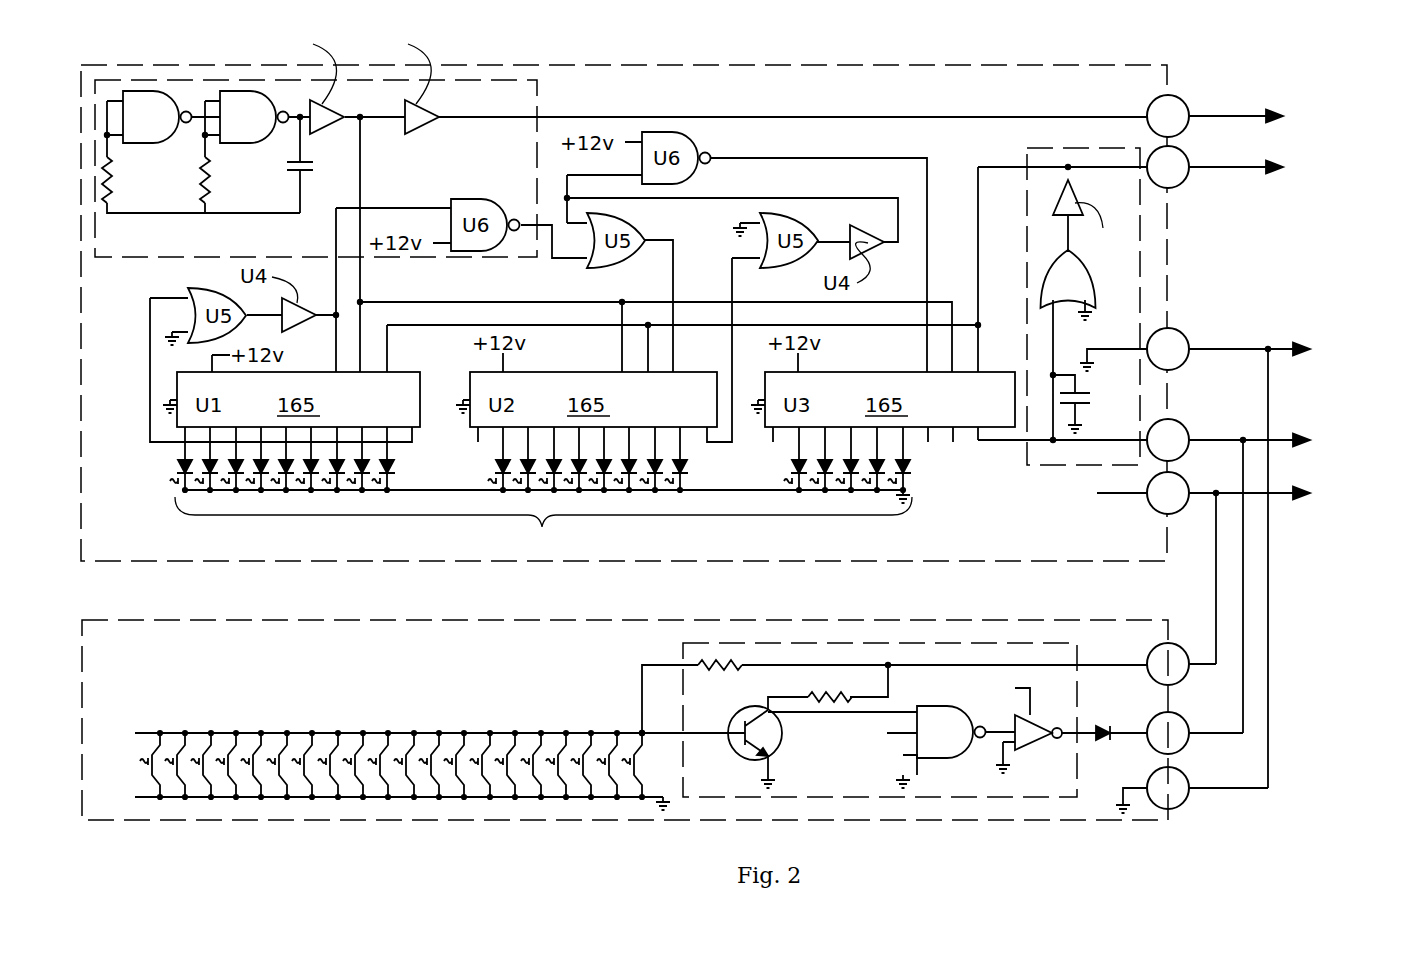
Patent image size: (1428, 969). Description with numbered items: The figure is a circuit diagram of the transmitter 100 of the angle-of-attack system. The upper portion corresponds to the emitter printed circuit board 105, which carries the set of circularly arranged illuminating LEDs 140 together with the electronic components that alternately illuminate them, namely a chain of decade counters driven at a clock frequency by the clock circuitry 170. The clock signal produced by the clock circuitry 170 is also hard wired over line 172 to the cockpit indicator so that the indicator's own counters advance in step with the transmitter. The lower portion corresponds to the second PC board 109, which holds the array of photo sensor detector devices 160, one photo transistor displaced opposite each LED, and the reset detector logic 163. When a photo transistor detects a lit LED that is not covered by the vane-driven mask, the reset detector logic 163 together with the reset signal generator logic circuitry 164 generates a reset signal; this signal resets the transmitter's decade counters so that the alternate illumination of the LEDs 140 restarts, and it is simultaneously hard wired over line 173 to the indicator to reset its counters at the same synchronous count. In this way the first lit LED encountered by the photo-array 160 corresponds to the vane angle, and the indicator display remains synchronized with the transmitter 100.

The transmitter 100 is at (1287, 583).
The printed circuit board 105 is at (670, 88).
The second PC board 109 is at (588, 650).
The LEDs 140 is at (542, 532).
The photo sensor detector devices 160 is at (398, 697).
The reset detector logic 163 is at (980, 652).
The reset signal generator logic circuitry 164 is at (1043, 150).
The clock circuitry 170 is at (495, 88).
The line 172 is at (1135, 113).
The line 173 is at (1207, 165).